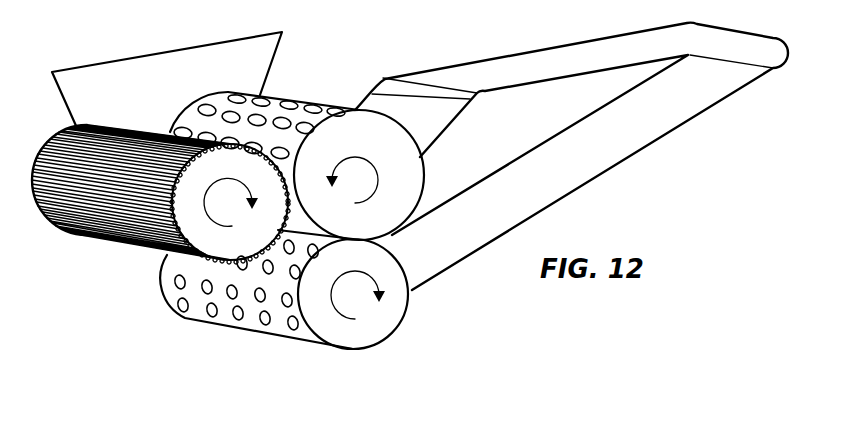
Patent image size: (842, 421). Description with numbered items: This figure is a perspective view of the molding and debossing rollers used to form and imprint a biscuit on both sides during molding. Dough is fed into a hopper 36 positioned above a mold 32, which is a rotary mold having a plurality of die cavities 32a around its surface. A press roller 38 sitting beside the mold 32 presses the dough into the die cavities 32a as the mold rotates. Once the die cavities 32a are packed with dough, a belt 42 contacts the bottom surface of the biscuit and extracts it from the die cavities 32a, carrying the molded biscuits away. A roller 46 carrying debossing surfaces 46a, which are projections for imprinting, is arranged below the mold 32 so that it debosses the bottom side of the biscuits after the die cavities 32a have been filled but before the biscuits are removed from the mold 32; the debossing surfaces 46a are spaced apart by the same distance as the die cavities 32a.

The hopper 36 is at (153, 53).
The mold 32 is at (328, 112).
The die cavities 32a is at (278, 122).
The press roller 38 is at (115, 240).
The second roller 46 is at (248, 333).
The debossing surfaces 46a is at (175, 310).
The belt 42 is at (652, 147).